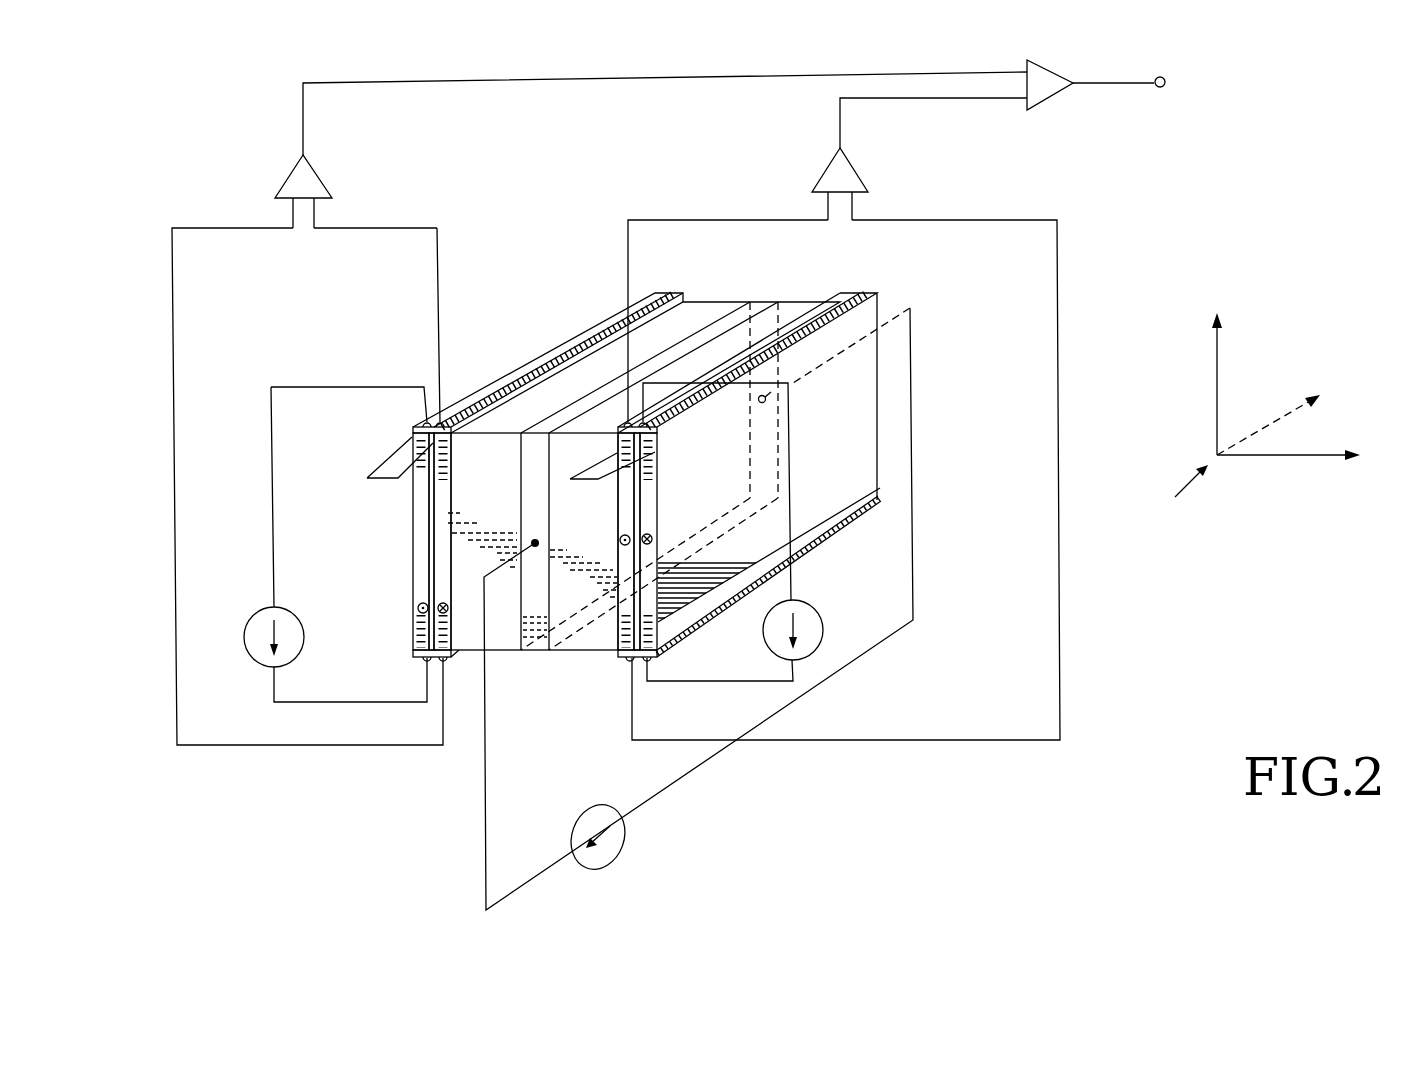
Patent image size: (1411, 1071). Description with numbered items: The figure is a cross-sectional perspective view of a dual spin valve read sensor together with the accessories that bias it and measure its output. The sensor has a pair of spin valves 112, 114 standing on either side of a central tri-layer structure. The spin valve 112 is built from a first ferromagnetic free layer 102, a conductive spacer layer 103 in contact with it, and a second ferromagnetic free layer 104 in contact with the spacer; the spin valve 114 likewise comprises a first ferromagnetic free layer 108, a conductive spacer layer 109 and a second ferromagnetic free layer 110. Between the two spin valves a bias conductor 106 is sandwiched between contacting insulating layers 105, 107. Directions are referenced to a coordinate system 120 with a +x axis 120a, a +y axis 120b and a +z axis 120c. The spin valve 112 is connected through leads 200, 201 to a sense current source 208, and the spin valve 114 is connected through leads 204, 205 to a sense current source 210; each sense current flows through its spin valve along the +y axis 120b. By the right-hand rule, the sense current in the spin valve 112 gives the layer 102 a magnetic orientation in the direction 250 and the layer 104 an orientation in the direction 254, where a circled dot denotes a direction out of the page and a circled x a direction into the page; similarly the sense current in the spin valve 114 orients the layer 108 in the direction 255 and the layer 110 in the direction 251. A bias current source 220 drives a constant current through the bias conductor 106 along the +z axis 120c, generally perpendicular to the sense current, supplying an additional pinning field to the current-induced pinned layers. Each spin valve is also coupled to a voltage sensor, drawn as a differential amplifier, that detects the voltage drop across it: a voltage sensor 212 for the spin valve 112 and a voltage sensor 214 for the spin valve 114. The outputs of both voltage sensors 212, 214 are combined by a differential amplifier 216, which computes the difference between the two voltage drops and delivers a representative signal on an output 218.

The first ferromagnetic free layer 102 is at (420, 513).
The conductive spacer layer 103 is at (430, 538).
The second ferromagnetic free layer 104 is at (442, 567).
The insulating layer 105 is at (492, 645).
The bias conductor 106 is at (532, 637).
The insulating layer 107 is at (582, 647).
The first ferromagnetic free layer 108 is at (623, 518).
The conductive spacer layer 109 is at (636, 492).
The second ferromagnetic free layer 110 is at (647, 467).
The spin valve 112 is at (396, 474).
The spin valve 114 is at (610, 482).
The coordinate system 120 is at (1174, 493).
The +x axis 120a is at (1283, 457).
The +y axis 120b is at (1215, 387).
The +z axis 120c is at (1283, 415).
The lead 200 is at (415, 660).
The lead 201 is at (407, 438).
The lead 204 is at (660, 655).
The lead 205 is at (657, 428).
The sense current source 208 is at (255, 613).
The sense current source 210 is at (813, 603).
The voltage sensor 212 is at (320, 175).
The voltage sensor 214 is at (855, 170).
The differential amplifier 216 is at (1047, 97).
The output 218 is at (1163, 88).
The bias current source 220 is at (622, 837).
The magnetic orientation direction 250 is at (418, 608).
The magnetic orientation direction 251 is at (657, 533).
The magnetic orientation direction 254 is at (440, 613).
The magnetic orientation direction 255 is at (620, 538).